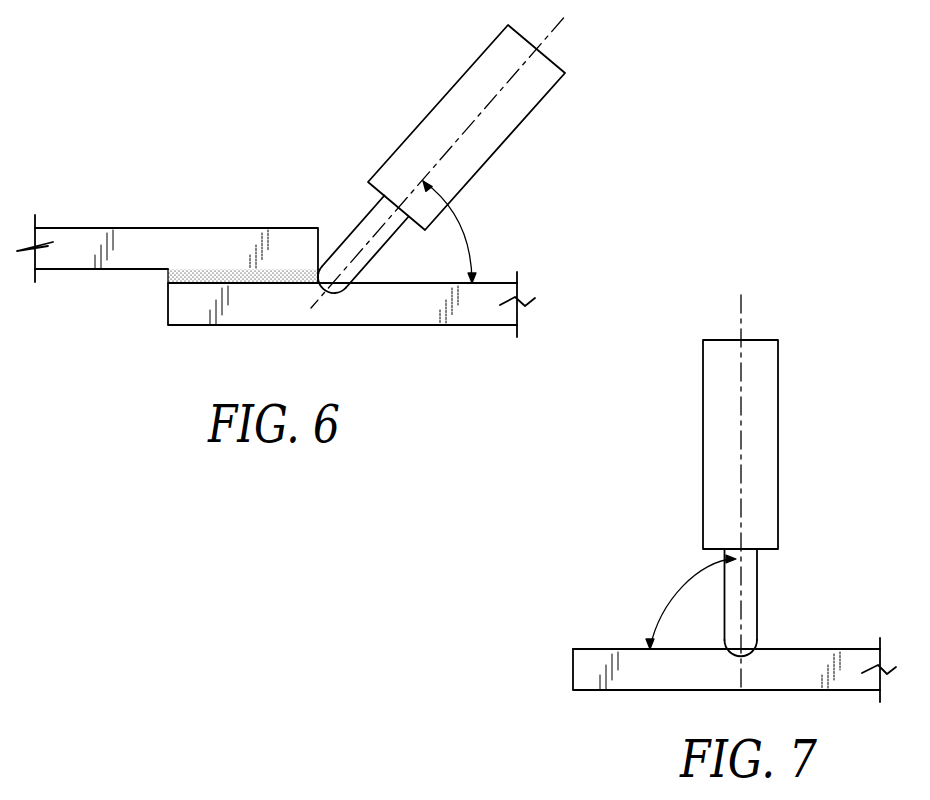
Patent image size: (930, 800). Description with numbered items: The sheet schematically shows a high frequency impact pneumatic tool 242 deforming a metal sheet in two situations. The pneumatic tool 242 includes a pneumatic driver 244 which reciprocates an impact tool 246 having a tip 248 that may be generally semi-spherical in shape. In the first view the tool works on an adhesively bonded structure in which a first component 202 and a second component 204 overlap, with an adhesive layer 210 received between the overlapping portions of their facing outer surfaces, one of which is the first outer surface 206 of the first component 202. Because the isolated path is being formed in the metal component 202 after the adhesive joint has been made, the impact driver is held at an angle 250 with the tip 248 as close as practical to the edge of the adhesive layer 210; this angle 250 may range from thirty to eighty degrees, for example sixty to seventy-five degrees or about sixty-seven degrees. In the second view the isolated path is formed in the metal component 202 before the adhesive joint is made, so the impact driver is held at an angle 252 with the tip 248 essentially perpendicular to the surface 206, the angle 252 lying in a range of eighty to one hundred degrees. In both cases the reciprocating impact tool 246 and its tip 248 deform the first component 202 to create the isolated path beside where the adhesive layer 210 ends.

In FIG. 6, the first component 202 is at (398, 315).
In FIG. 7, the first component 202 is at (735, 680).
In FIG. 6, the second component 204 is at (190, 250).
In FIG. 6, the first outer surface 206 is at (498, 283).
In FIG. 7, the first outer surface 206 is at (587, 649).
In FIG. 6, the adhesive layer 210 is at (172, 277).
In FIG. 6, the pneumatic tool 242 is at (465, 203).
In FIG. 7, the pneumatic tool 242 is at (776, 488).
In FIG. 6, the pneumatic driver 244 is at (490, 137).
In FIG. 7, the pneumatic driver 244 is at (757, 427).
In FIG. 6, the impact tool 246 is at (353, 274).
In FIG. 7, the impact tool 246 is at (785, 599).
In FIG. 6, the tip 248 is at (335, 287).
In FIG. 7, the tip 248 is at (750, 664).
In FIG. 6, the angle 250 is at (467, 238).
In FIG. 7, the angle 252 is at (672, 592).